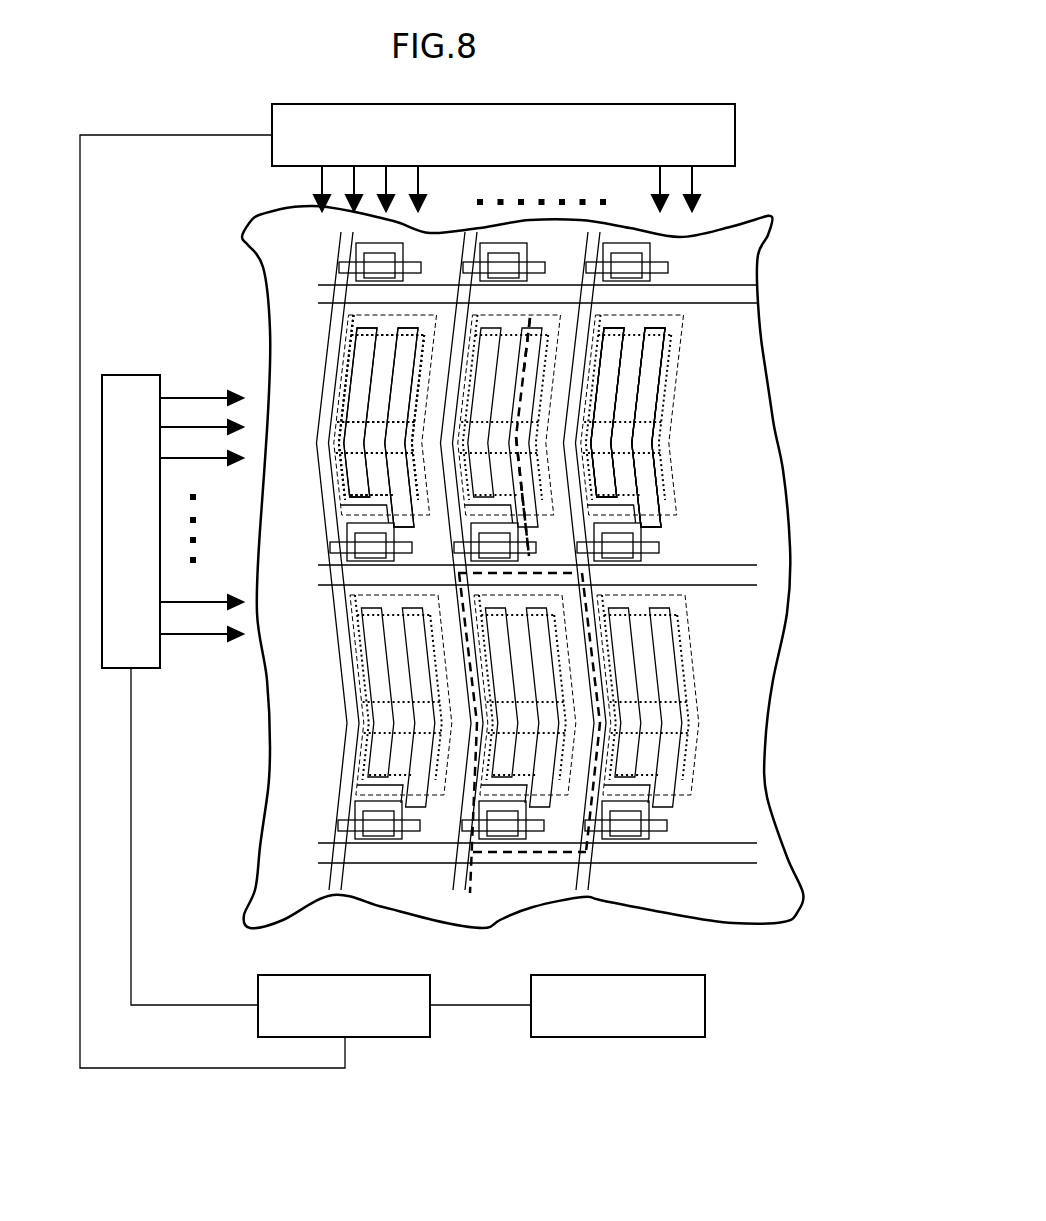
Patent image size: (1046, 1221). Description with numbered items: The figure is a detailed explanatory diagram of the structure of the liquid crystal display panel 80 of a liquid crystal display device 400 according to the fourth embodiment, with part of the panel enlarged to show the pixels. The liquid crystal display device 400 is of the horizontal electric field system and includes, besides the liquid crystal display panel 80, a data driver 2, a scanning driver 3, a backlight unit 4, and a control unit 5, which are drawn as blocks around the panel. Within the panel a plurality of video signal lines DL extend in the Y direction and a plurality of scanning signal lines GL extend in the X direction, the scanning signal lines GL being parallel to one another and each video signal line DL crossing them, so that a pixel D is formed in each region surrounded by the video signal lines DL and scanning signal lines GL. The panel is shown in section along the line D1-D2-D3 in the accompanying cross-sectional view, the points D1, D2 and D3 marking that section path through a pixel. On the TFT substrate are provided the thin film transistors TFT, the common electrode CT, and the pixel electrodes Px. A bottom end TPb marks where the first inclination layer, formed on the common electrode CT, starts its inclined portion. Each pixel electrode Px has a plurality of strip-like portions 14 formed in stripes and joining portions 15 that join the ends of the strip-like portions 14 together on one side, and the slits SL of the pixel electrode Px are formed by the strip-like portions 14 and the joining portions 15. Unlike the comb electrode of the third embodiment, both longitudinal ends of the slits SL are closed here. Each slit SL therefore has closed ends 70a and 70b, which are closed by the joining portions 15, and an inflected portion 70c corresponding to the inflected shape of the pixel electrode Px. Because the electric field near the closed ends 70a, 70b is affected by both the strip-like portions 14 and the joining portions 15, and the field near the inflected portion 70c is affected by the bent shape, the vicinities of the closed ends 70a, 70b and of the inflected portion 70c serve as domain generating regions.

The liquid crystal display device 400 is at (237, 120).
The data driver 2 is at (277, 148).
The scanning driver 3 is at (125, 375).
The backlight unit 4 is at (706, 1006).
The control unit 5 is at (380, 975).
The liquid crystal display panel 80 is at (667, 243).
The scanning signal line GL is at (322, 288).
The video signal line DL is at (336, 883).
The pixel D is at (529, 615).
The line D1-D2-D3 D1 is at (541, 346).
The line D1-D2-D3 D2 is at (526, 461).
The line D1-D2- D3 is at (539, 529).
The thin film transistor TFT is at (367, 559).
The pixel electrode Px is at (377, 442).
The joining portion 15 is at (353, 313).
The strip-like portion 14 is at (338, 435).
The slit SL is at (410, 378).
The bottom end of inclined portion TPb is at (340, 452).
The common electrode CT is at (365, 506).
The closed end 70a is at (655, 450).
The closed end 70b is at (660, 322).
The inflected portion 70c is at (638, 414).